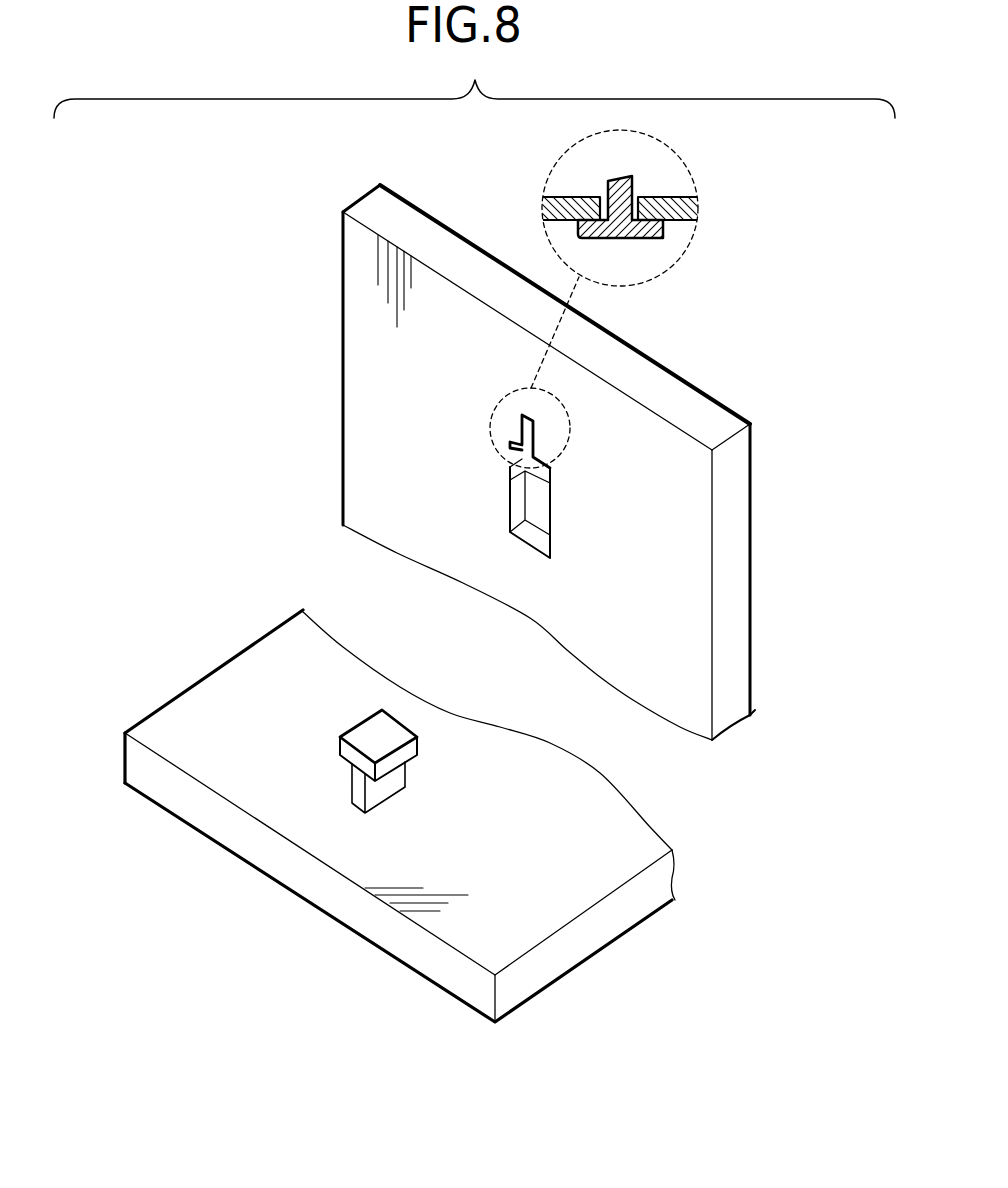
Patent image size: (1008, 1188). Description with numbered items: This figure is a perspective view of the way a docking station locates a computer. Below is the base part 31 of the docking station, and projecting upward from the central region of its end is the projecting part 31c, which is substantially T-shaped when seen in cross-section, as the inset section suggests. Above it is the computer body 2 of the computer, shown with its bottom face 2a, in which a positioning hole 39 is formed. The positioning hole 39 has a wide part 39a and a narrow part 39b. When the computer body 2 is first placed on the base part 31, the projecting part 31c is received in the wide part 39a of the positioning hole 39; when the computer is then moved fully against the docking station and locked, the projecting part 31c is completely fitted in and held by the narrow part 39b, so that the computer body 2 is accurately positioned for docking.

The computer body 2 is at (686, 391).
The bottom face 2a is at (693, 457).
The positioning hole 39 is at (575, 498).
The wide part 39a is at (533, 510).
The narrow part 39b is at (523, 442).
The base part 31 is at (550, 920).
The projecting part 31c is at (390, 733).